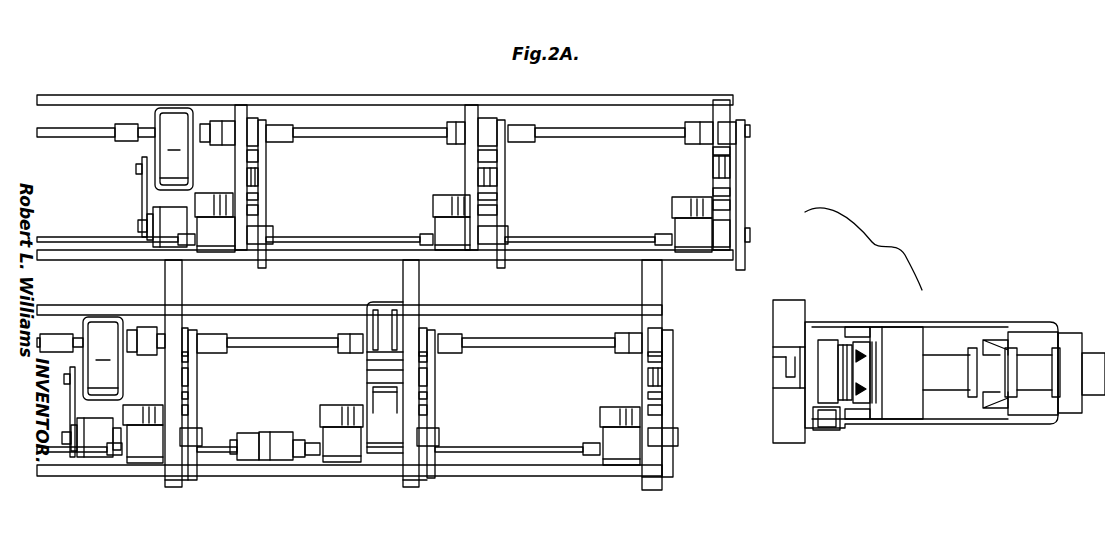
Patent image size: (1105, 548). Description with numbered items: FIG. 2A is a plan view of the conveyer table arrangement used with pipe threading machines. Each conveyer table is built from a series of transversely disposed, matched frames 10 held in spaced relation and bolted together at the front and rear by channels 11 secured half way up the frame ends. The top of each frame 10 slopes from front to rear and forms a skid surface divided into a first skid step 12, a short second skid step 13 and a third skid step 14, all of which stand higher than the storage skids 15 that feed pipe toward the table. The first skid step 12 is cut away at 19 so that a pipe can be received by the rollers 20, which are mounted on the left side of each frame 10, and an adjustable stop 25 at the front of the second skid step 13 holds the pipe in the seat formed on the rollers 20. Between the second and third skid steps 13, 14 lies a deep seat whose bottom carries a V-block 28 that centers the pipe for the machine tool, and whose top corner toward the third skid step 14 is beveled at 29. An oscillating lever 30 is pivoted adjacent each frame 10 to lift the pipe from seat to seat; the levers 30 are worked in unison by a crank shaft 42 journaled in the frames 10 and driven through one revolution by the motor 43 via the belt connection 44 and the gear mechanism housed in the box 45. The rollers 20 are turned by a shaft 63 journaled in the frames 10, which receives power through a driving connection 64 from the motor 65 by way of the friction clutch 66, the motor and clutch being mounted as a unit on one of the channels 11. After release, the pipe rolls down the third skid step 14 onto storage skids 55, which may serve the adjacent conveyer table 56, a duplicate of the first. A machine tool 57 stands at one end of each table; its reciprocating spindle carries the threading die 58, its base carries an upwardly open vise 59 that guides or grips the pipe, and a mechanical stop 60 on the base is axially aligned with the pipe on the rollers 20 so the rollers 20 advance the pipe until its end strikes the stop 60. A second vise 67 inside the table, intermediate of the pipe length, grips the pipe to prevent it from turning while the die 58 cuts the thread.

The frame 10 is at (246, 122).
The channel 11 is at (149, 96).
The first skid step 12 is at (242, 242).
The second skid step 13 is at (250, 180).
The third skid step 14 is at (251, 124).
The storage skid 15 is at (186, 488).
The cut away 19 is at (252, 212).
The roller 20 is at (211, 200).
The stop 25 is at (252, 198).
The V-block 28 is at (252, 160).
The bevel 29 is at (236, 144).
The oscillating lever 30 is at (304, 174).
The crank shaft 42 is at (366, 138).
The motor 43 is at (170, 220).
The belt connection 44 is at (142, 190).
The gear box 45 is at (170, 145).
The storage skid 55 is at (182, 287).
The adjacent conveyer table 56 is at (723, 192).
The machine tool 57 is at (957, 338).
The threading die 58 is at (824, 347).
The vise 59 is at (786, 358).
The mechanical stop 60 is at (822, 428).
The shaft 63 is at (338, 241).
The driving connection 64 is at (303, 441).
The motor 65 is at (243, 440).
The friction clutch 66 is at (276, 434).
The vise 67 is at (388, 312).